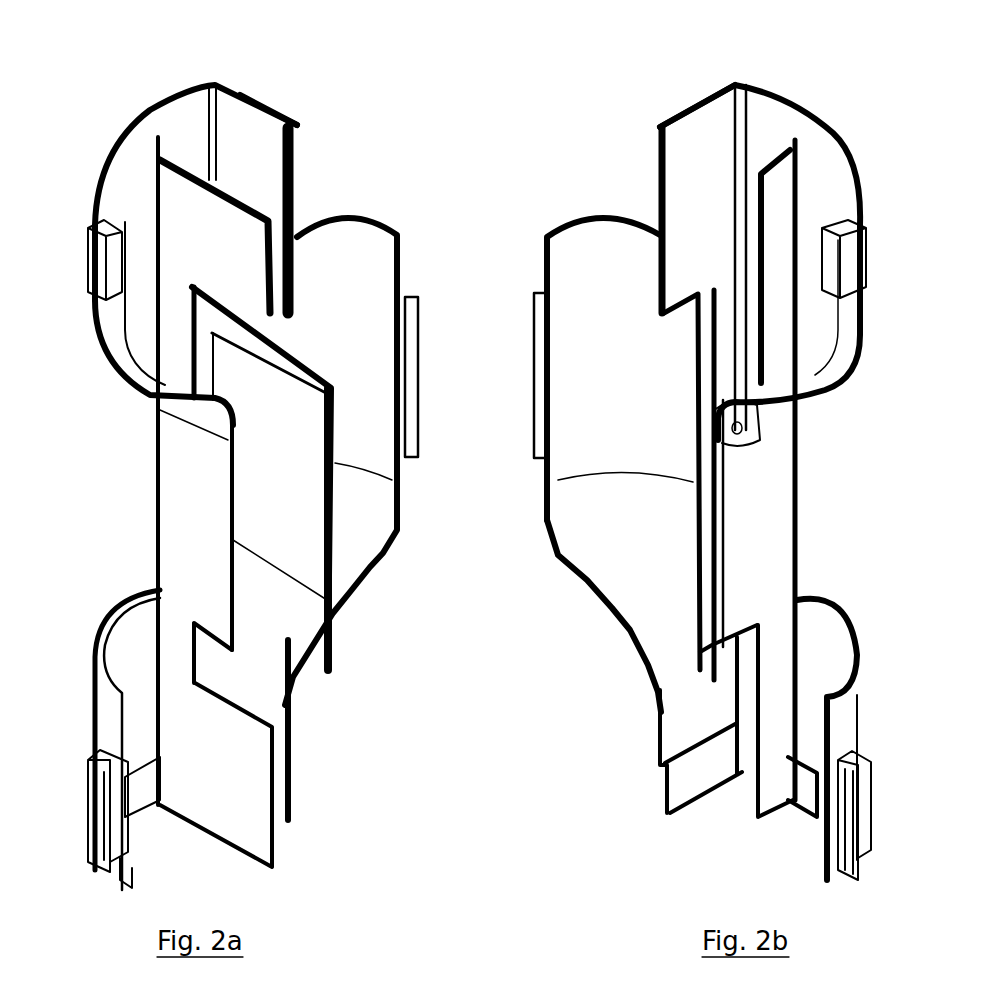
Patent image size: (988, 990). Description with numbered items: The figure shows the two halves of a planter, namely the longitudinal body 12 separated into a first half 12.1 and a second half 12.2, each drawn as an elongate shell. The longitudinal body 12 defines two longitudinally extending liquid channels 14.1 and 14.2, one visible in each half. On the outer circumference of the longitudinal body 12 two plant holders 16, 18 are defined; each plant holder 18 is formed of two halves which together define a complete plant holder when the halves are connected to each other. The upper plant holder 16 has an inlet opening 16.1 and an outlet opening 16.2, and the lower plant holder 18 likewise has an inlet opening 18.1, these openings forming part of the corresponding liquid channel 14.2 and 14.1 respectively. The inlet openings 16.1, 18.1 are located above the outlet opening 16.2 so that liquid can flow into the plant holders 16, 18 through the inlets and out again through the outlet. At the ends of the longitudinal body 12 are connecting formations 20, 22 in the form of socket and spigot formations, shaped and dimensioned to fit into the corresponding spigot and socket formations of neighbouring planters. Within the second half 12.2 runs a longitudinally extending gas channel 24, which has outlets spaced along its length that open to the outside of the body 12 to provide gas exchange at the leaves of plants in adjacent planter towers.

In FIG. 2A, the longitudinal body 12 is at (611, 99).
In FIG. 2A, the first half of longitudinal body 12.1 is at (246, 121).
In FIG. 2B, the second half of longitudinal body 12.2 is at (721, 122).
In FIG. 2A, the liquid channel 14.1 is at (140, 195).
In FIG. 2B, the liquid channel 14.1 is at (826, 181).
In FIG. 2A, the liquid channel 14.2 is at (197, 138).
In FIG. 2B, the liquid channel 14.2 is at (702, 115).
In FIG. 2A, the plant holder 16 is at (343, 238).
In FIG. 2B, the plant holder 16 is at (624, 240).
In FIG. 2A, the inlet opening 16.1 is at (290, 320).
In FIG. 2B, the inlet opening 16.1 is at (693, 320).
In FIG. 2B, the outlet opening 16.2 is at (705, 682).
In FIG. 2A, the plant holder 18 is at (132, 650).
In FIG. 2B, the plant holder 18 is at (818, 632).
In FIG. 2A, the inlet opening 18.1 is at (215, 656).
In FIG. 2A, the connecting formation 20 is at (268, 140).
In FIG. 2B, the connecting formation 20 is at (679, 144).
In FIG. 2A, the connecting formation 22 is at (126, 876).
In FIG. 2B, the connecting formation 22 is at (832, 877).
In FIG. 2B, the gas channel 24 is at (765, 150).